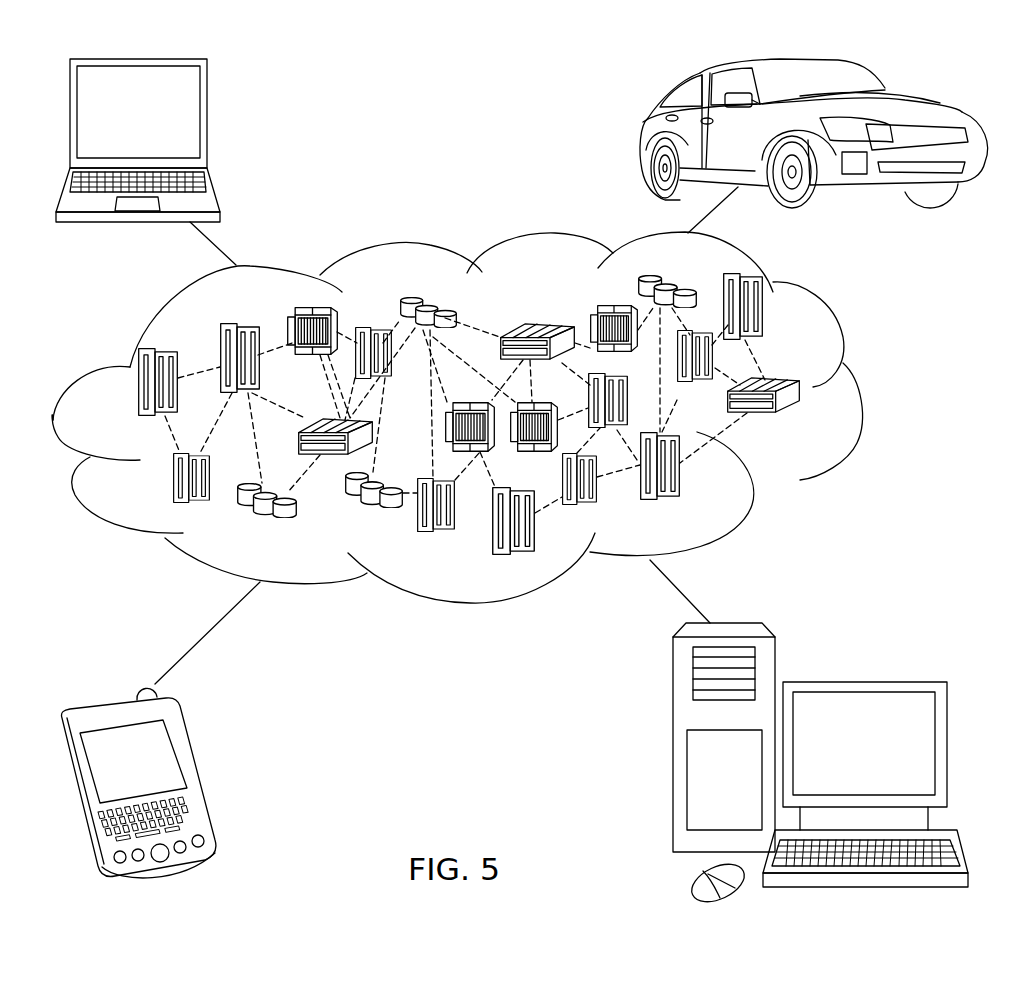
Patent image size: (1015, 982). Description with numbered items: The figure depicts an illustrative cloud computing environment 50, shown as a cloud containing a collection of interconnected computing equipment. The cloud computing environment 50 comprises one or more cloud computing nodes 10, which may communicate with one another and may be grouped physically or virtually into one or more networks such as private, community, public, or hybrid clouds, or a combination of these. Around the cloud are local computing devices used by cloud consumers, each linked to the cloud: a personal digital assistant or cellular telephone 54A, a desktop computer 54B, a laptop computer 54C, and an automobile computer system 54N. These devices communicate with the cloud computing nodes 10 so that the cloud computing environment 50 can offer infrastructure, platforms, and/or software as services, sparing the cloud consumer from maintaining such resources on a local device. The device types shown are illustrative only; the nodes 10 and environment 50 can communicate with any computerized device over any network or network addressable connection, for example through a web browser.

The cloud computing environment 50 is at (860, 393).
The cloud computing node 10 is at (803, 422).
The personal digital assistant or cellular telephone 54A is at (198, 773).
The desktop computer 54B is at (860, 681).
The laptop computer 54C is at (207, 118).
The automobile computer system 54N is at (645, 137).